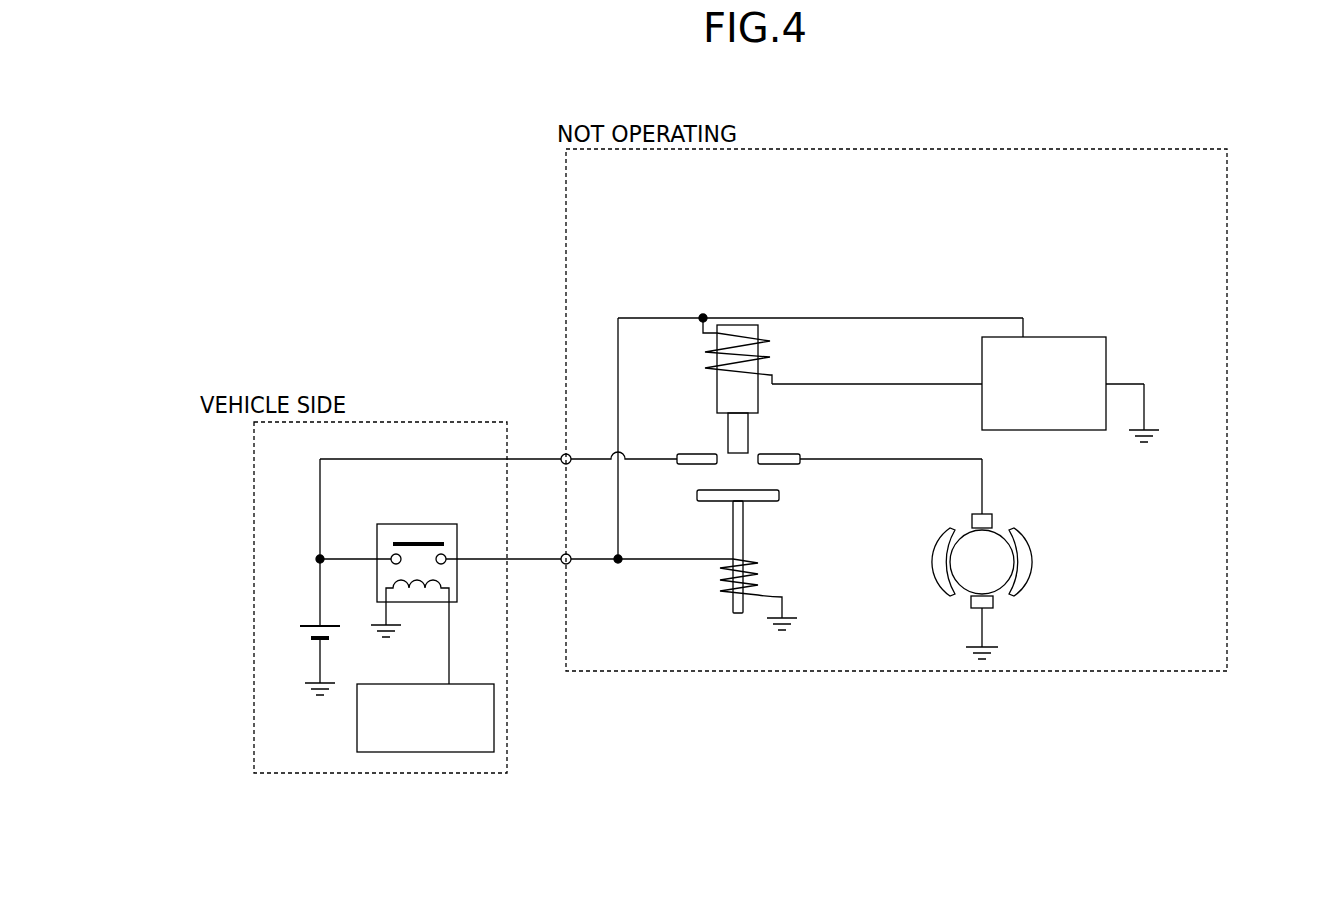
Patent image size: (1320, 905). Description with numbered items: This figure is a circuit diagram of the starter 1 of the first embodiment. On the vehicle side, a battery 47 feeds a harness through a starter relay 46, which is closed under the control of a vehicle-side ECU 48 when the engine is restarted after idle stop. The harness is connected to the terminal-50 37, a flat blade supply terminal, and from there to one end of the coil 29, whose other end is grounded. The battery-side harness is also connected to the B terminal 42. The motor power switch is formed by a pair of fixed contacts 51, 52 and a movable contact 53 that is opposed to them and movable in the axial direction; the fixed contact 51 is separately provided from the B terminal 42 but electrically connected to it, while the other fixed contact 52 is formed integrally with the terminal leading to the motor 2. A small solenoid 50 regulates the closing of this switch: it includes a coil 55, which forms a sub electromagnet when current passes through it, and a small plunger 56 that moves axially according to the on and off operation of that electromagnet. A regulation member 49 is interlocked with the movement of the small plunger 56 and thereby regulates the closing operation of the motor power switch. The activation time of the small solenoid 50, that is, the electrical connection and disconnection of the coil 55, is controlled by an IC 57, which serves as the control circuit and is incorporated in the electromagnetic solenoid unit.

The starter 1 is at (1171, 149).
The motor 2 is at (1007, 613).
The coil 29 is at (738, 613).
The terminal-50 37 is at (563, 564).
The B terminal 42 is at (562, 454).
The starter relay 46 is at (425, 524).
The battery 47 is at (306, 633).
The vehicle-side ECU 48 is at (454, 752).
The regulation member 49 is at (738, 430).
The small solenoid 50 is at (724, 339).
The fixed contact 51 is at (688, 464).
The fixed contact 52 is at (790, 464).
The movable contact 53 is at (715, 498).
The coil 55 is at (738, 337).
The small plunger 56 is at (738, 402).
The IC 57 is at (1100, 356).